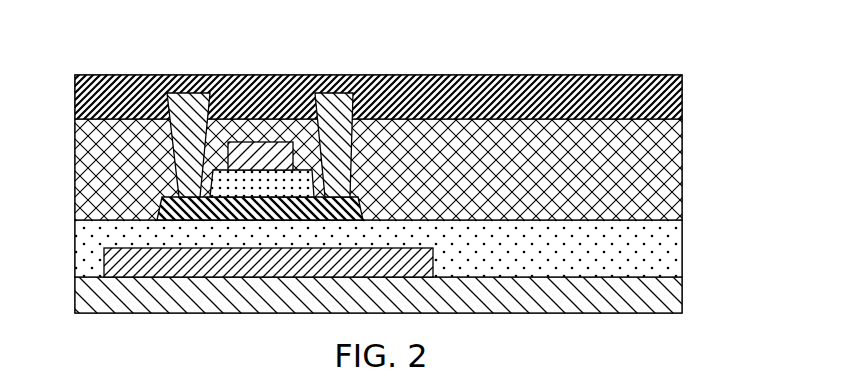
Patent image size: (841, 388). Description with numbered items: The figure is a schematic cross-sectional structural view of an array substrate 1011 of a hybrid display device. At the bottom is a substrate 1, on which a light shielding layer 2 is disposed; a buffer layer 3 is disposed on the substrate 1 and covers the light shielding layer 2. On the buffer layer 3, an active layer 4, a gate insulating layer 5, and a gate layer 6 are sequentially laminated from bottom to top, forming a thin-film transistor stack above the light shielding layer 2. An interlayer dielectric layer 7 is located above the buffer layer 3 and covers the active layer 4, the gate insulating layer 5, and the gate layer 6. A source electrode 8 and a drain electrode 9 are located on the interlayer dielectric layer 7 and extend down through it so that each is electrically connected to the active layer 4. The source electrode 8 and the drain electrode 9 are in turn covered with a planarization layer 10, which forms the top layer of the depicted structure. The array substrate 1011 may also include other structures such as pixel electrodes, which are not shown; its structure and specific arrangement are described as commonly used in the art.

The array substrate 1011 is at (72, 32).
The substrate 1 is at (665, 294).
The light shielding layer 2 is at (125, 268).
The buffer layer 3 is at (665, 252).
The active layer 4 is at (158, 215).
The gate insulating layer 5 is at (278, 180).
The gate layer 6 is at (244, 145).
The interlayer dielectric layer 7 is at (665, 177).
The source electrode 8 is at (189, 108).
The drain electrode 9 is at (347, 97).
The planarization layer 10 is at (682, 91).